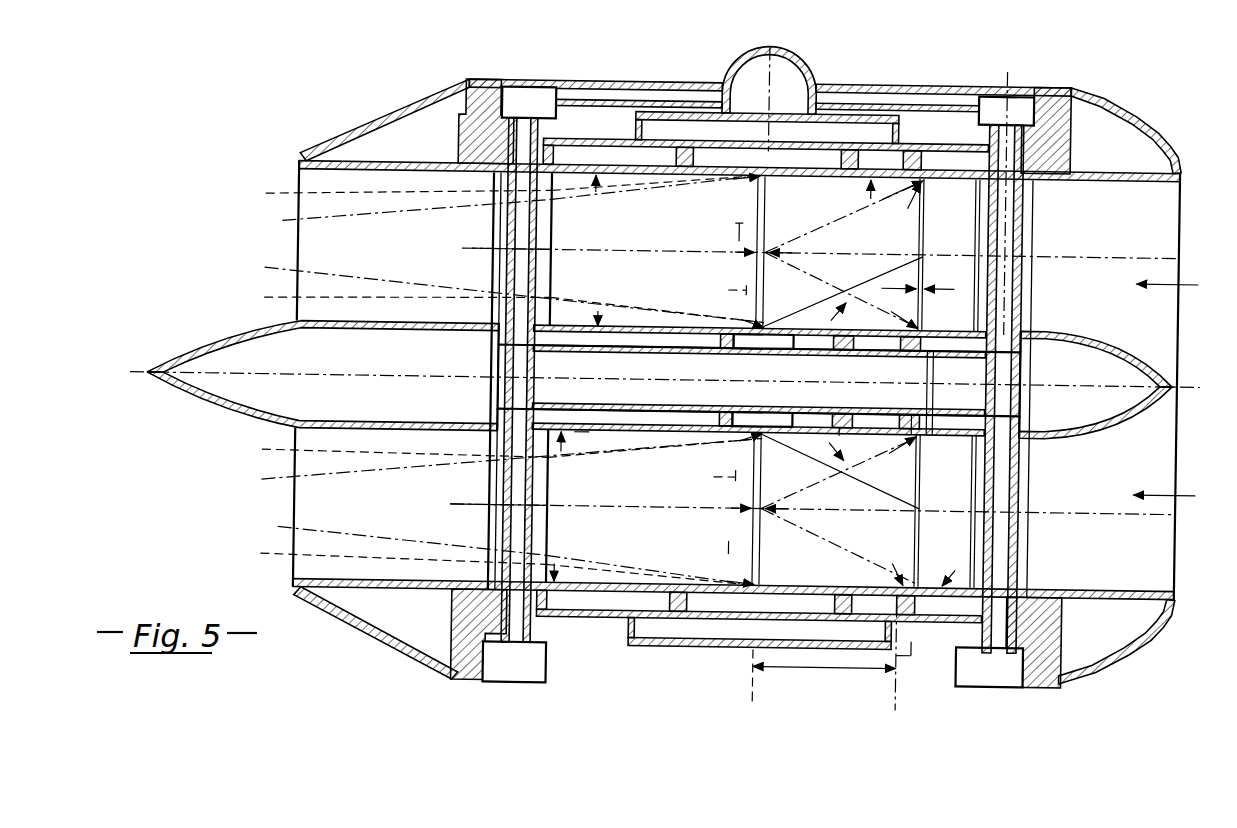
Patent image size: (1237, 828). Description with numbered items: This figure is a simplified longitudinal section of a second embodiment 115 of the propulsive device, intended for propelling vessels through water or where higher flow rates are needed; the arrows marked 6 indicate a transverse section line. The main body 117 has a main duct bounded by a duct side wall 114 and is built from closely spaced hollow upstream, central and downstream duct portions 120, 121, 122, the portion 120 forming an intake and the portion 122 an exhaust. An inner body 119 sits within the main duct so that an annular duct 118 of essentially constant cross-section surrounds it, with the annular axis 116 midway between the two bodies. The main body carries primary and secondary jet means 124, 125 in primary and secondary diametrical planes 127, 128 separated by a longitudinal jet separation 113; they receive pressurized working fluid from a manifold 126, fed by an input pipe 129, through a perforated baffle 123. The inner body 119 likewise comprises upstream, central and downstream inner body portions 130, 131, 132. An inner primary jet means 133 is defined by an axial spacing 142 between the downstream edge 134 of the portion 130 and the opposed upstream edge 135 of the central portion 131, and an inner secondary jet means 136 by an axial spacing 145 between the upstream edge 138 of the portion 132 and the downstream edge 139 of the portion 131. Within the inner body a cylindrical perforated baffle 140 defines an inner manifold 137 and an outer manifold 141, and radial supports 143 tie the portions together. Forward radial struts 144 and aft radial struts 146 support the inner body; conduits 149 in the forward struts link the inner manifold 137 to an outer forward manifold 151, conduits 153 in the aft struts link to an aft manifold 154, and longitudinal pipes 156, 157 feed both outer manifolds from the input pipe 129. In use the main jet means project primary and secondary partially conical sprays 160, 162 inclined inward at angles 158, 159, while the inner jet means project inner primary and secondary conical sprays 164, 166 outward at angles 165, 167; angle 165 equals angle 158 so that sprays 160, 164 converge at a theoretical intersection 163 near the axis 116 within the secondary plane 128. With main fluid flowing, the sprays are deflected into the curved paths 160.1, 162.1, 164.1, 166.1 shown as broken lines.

The section line 6- 6 is at (973, 70).
The longitudinal jet separation 113 is at (800, 670).
The duct side wall 114 is at (960, 556).
The second embodiment 115 is at (1142, 658).
The annular axis 116 is at (1187, 258).
The main body 117 is at (1141, 106).
The annular duct 118 is at (1095, 310).
The inner body 119 is at (1037, 452).
The upstream duct portion 120 is at (966, 174).
The central duct portion 121 is at (857, 180).
The downstream duct portion 122 is at (640, 177).
The perforated baffle 123 is at (833, 130).
The primary jet means 124 is at (914, 190).
The secondary jet means 125 is at (735, 178).
The manifold 126 is at (615, 128).
The primary diametrical plane 127 is at (917, 636).
The secondary diametrical plane 128 is at (752, 686).
The input pipe 129 is at (728, 56).
The upstream inner body portion 130 is at (920, 434).
The central inner body portion 131 is at (828, 436).
The downstream inner body portion 132 is at (585, 448).
The inner primary jet means 133 is at (921, 313).
The downstream edge 134 is at (930, 425).
The upstream edge 135 is at (922, 420).
The inner secondary jet means 136 is at (758, 316).
The inner manifold 137 is at (742, 377).
The upstream edge 138 is at (780, 410).
The downstream edge 139 is at (838, 408).
The cylindrical perforated baffle 140 is at (590, 350).
The outer manifold 141 is at (607, 343).
The axial spacing 142 is at (966, 268).
The radial supports 143 is at (693, 350).
The forward radial struts 144 is at (1035, 238).
The axial spacing 145 is at (683, 272).
The aft radial struts 146 is at (470, 251).
The conduits 149 is at (1022, 188).
The outer forward manifold 151 is at (985, 112).
The conduits 153 is at (527, 240).
The aft manifold 154 is at (538, 92).
The longitudinal pipe 156 is at (929, 72).
The longitudinal pipe 157 is at (627, 71).
The angle 158 is at (845, 207).
The angle 159 is at (598, 188).
The primary partially conical spray 160 is at (803, 232).
The curved path 160.1 is at (703, 388).
The secondary partially conical spray 162 is at (373, 219).
The curved path 162.1 is at (284, 206).
The theoretical intersection 163 is at (750, 254).
The inner primary conical spray 164 is at (810, 266).
The curved path 164.1 is at (700, 383).
The angle 165 is at (833, 310).
The inner secondary conical spray 166 is at (602, 303).
The curved path 166.1 is at (284, 310).
The angle 167 is at (600, 310).